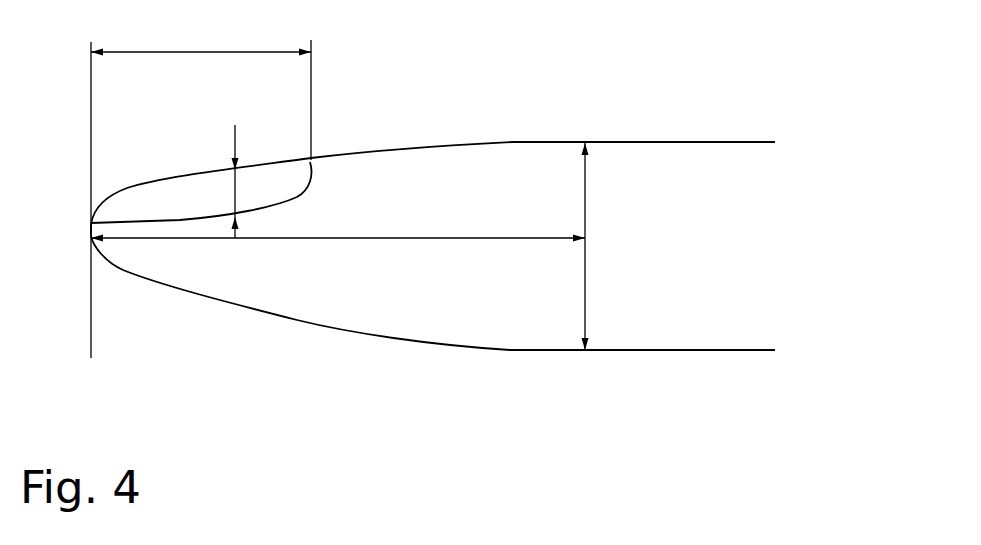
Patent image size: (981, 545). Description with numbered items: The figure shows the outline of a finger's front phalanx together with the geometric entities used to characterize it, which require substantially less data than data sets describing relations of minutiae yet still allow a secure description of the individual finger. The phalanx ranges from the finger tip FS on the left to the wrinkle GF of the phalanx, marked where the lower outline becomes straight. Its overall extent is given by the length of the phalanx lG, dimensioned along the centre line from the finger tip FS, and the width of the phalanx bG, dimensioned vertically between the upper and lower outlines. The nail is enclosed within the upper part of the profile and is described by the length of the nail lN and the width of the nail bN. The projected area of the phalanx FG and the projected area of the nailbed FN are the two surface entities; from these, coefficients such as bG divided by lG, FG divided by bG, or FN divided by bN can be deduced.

The projected area of the phalanx FG is at (430, 175).
The projected area of the nailbed FN is at (175, 197).
The finger tip FS is at (67, 239).
The wrinkle of the phalanx GF is at (583, 350).
The length of the nail lN is at (201, 84).
The width of the nail bN is at (215, 173).
The length of the phalanx lG is at (338, 218).
The width of the phalanx bG is at (610, 246).